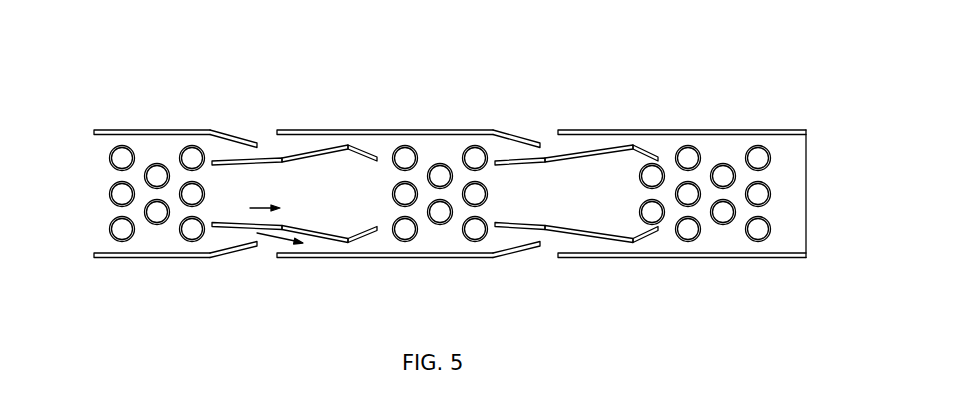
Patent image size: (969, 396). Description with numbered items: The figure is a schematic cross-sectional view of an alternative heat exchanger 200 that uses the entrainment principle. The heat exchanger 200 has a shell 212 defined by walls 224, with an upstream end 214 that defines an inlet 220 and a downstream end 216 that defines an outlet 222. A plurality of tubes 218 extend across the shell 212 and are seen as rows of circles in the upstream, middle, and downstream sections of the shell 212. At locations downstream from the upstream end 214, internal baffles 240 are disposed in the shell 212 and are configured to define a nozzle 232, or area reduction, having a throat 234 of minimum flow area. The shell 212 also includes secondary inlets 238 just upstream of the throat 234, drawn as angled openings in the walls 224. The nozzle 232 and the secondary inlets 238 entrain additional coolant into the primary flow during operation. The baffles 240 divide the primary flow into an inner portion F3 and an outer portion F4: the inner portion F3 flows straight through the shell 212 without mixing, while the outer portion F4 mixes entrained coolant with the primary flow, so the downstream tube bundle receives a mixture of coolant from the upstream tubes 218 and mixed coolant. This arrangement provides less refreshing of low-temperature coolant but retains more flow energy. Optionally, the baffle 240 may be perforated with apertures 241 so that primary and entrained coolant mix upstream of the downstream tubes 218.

The heat exchanger 200 is at (430, 40).
The shell 212 is at (633, 134).
The upstream end 214 is at (108, 270).
The downstream end 216 is at (800, 267).
The tubes 218 is at (187, 242).
The inlet 220 is at (95, 258).
The outlet 222 is at (805, 256).
The walls 224 is at (437, 135).
The nozzle 232 is at (435, 195).
The throat 234 is at (348, 150).
The secondary inlets 238 is at (238, 135).
The internal baffles 240 is at (237, 165).
The apertures 241 is at (278, 161).
The inner portion F3 is at (248, 210).
The outer portion F4 is at (271, 240).